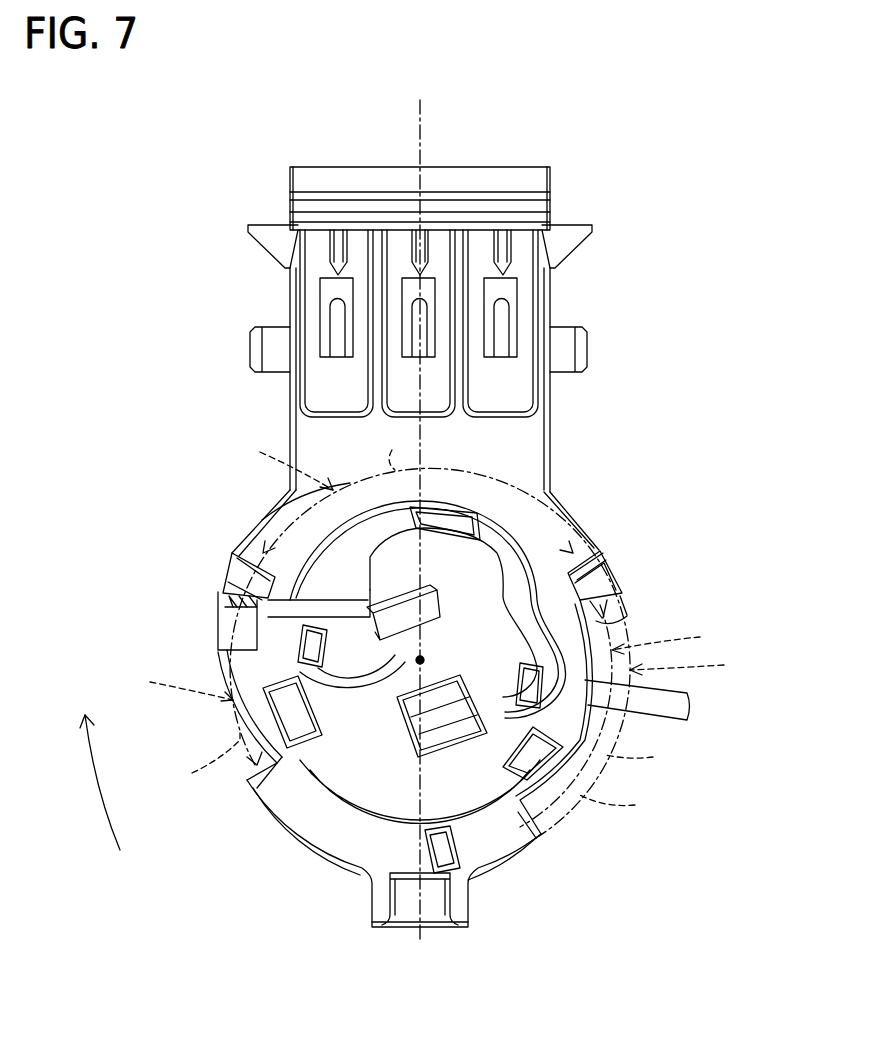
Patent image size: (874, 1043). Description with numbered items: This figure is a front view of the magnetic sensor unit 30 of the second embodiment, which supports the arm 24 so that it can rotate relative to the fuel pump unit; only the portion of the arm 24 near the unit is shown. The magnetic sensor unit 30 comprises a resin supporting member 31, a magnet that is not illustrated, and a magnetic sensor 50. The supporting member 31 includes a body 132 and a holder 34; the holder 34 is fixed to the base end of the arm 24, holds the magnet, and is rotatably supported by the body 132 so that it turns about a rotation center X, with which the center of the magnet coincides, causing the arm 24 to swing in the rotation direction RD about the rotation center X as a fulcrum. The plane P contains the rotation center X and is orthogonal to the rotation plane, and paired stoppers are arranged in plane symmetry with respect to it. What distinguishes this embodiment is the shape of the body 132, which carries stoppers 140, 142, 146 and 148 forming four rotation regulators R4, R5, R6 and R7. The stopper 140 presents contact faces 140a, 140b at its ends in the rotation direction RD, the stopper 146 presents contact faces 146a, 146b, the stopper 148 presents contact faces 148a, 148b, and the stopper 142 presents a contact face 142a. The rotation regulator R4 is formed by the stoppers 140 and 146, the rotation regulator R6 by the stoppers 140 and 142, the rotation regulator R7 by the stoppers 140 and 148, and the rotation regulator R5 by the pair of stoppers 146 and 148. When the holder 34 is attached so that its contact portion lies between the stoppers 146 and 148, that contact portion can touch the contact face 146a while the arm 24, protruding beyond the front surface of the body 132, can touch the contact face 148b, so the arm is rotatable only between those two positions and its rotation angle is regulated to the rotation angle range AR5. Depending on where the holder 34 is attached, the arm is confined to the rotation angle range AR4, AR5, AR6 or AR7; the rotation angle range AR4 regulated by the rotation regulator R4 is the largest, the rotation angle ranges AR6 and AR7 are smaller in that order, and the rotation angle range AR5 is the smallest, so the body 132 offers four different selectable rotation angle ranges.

The magnetic sensor unit 30 is at (417, 546).
The supporting member 31 is at (556, 401).
The body 132 is at (530, 440).
The magnetic sensor 50 is at (337, 304).
The holder 34 is at (532, 515).
The arm 24 is at (682, 712).
The stopper 140 is at (652, 574).
The right engagement lower surface 140a is at (612, 612).
The right engagement inclined surface 140b is at (600, 553).
The stopper 146 is at (193, 578).
The contact face 146a is at (243, 572).
The left engagement inclined surface 146b is at (253, 543).
The stopper 148 is at (415, 842).
The flange right end 148a is at (545, 822).
The contact face 148b is at (247, 778).
The stopper 142 is at (467, 917).
The tab opening 142a is at (448, 828).
The plane P is at (418, 130).
The rotation center X is at (420, 660).
The rotation regulator R4 is at (289, 488).
The rotation angle range AR4 is at (376, 447).
The rotation regulator R5 is at (187, 717).
The rotation angle range AR5 is at (190, 760).
The rotation regulator R6 is at (670, 640).
The rotation regulator R7 is at (692, 666).
The rotation angle range AR6 is at (629, 806).
The rotation angle range AR7 is at (651, 758).
The rotation direction RD is at (123, 800).